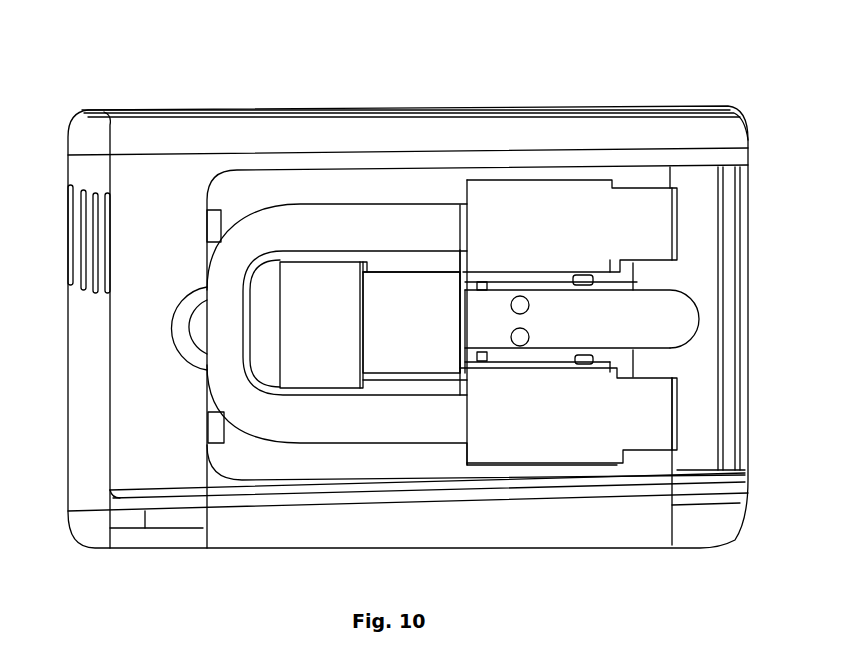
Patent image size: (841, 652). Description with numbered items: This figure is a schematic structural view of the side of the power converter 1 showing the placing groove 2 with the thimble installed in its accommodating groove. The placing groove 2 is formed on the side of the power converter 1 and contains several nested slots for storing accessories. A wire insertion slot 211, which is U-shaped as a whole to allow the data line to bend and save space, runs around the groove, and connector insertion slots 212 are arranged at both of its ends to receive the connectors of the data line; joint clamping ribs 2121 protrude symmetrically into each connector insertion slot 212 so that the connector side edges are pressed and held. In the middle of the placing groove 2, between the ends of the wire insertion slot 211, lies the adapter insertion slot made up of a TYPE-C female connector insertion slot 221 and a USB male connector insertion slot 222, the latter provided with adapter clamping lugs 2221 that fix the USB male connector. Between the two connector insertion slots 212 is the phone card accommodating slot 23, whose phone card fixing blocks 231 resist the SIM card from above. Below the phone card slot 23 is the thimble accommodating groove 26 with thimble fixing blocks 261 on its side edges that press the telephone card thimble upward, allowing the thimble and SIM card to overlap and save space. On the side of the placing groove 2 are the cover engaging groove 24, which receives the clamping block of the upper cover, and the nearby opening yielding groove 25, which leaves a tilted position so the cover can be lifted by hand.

The power converter 1 is at (315, 115).
The placing groove 2 is at (270, 180).
The wire insertion slot 211 is at (253, 237).
The cover engaging groove 24 is at (207, 212).
The opening yielding groove 25 is at (187, 322).
The TYPE-C female connector insertion slot 221 is at (335, 268).
The USB male connector insertion slot 222 is at (397, 287).
The adapter clamping lug 2221 is at (434, 272).
The connector insertion slot 212 is at (497, 183).
The joint clamping rib 2121 is at (578, 272).
The phone card accommodating slot 23 is at (607, 272).
The phone card fixing block 231 is at (578, 278).
The thimble accommodating groove 26 is at (678, 312).
The thimble fixing block 261 is at (655, 350).